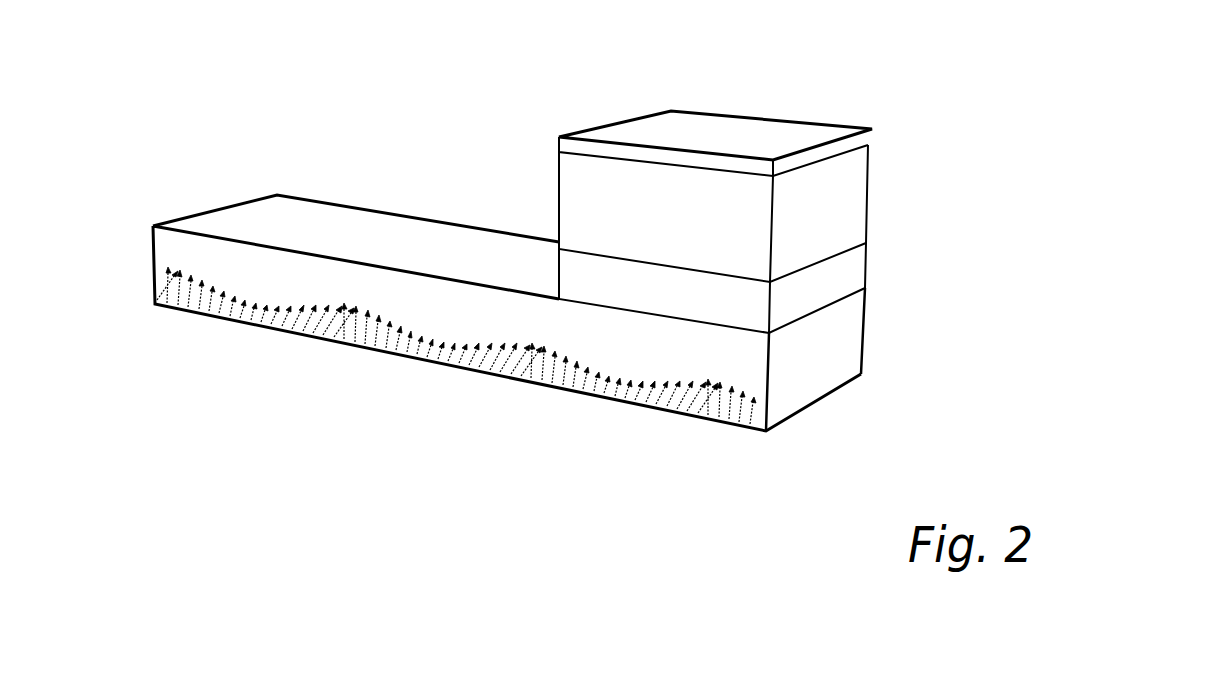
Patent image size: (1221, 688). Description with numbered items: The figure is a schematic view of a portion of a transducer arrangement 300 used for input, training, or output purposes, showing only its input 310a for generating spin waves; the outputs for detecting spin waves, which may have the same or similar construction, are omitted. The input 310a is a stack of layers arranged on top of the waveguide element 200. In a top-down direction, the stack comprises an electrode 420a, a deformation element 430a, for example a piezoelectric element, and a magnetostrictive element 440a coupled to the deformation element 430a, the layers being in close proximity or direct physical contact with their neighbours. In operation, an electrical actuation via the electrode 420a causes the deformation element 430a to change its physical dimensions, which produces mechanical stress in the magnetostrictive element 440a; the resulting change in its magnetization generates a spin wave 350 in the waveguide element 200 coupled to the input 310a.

The waveguide element 200 is at (818, 363).
The transducer arrangement 300 is at (669, 322).
The input 310a is at (834, 271).
The spin wave 350 is at (687, 385).
The electrode 420a is at (855, 142).
The deformation element 430a is at (835, 205).
The magnetostrictive element 440a is at (835, 283).